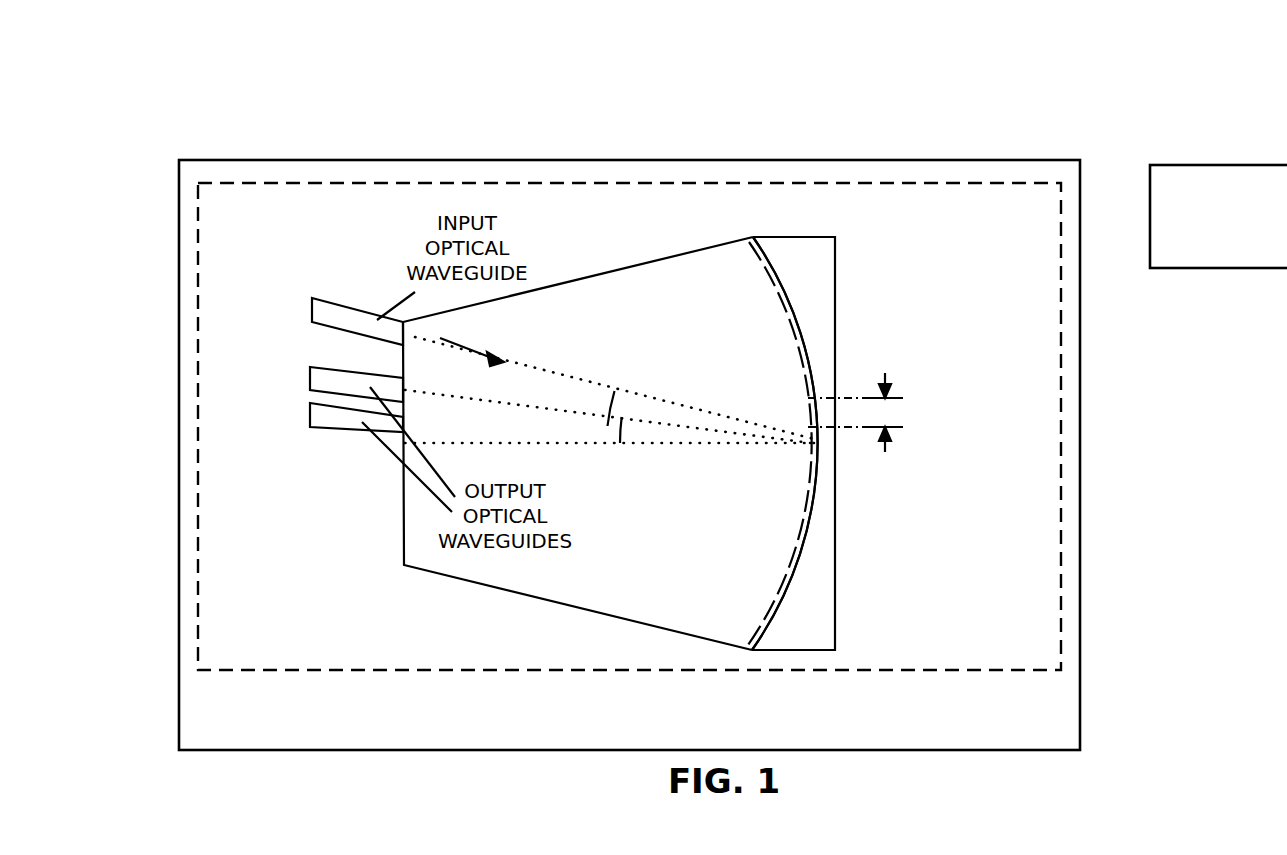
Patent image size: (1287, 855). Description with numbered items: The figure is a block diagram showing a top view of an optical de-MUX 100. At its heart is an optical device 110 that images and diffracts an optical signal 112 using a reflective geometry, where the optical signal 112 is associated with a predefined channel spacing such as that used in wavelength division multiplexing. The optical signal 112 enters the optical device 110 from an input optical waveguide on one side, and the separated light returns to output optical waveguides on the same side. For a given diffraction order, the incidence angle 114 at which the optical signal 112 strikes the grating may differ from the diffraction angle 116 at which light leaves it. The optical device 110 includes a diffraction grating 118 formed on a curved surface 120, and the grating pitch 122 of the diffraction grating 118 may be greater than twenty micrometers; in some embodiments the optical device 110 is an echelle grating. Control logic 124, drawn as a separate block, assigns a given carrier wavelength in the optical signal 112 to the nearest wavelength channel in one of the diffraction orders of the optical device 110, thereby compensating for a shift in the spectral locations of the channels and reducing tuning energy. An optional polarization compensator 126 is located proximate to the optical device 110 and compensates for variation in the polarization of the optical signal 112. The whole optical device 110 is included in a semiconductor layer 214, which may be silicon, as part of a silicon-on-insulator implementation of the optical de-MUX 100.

The optical de-MUX 100 is at (1083, 97).
The optical device 110 is at (610, 420).
The optical signal 112 is at (478, 345).
The incidence angle 114 is at (608, 407).
The diffraction angle 116 is at (603, 432).
The diffraction grating 118 is at (807, 357).
The curved surface 120 is at (785, 613).
The grating pitch 122 is at (887, 412).
The control logic 124 is at (1218, 216).
The polarization compensator 126 is at (713, 492).
The semiconductor layer 214 is at (629, 462).